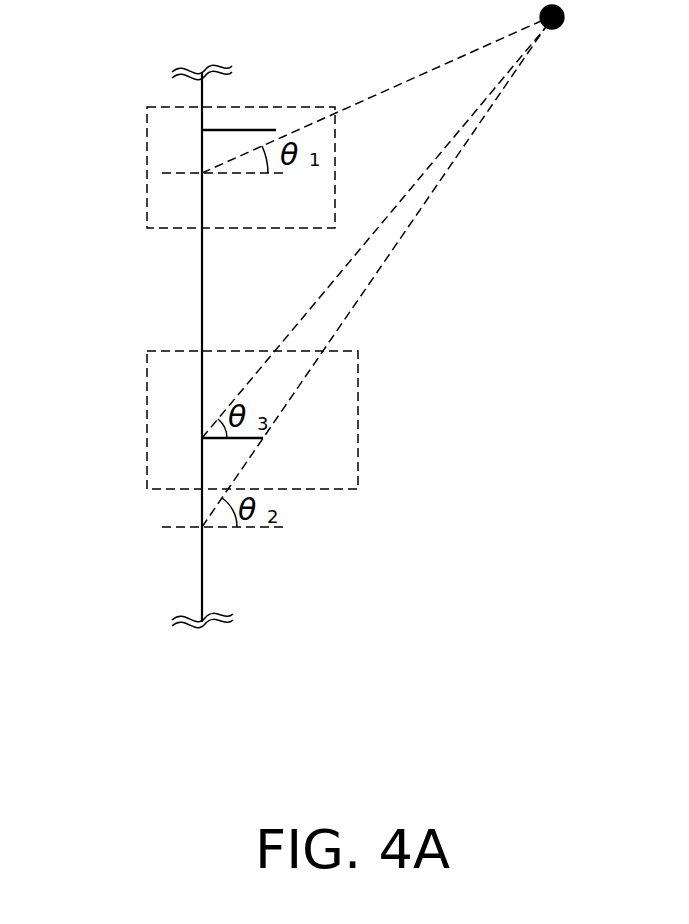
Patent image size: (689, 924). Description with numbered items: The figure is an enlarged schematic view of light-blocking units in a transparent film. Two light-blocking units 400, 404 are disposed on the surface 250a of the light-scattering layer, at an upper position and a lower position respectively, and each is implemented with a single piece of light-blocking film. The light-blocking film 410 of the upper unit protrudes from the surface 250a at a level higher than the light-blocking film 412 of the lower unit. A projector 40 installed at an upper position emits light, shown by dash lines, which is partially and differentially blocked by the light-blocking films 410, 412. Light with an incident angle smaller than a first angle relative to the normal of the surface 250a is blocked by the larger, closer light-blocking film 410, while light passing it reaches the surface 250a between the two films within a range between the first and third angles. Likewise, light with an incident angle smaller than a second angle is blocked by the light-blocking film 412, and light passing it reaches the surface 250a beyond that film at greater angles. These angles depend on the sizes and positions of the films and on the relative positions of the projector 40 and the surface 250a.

The projector 40 is at (565, 17).
The light-blocking unit 400 is at (167, 205).
The light-blocking unit 404 is at (168, 456).
The light-blocking film 410 is at (276, 130).
The light-blocking film 412 is at (237, 442).
The surface 250a is at (202, 560).